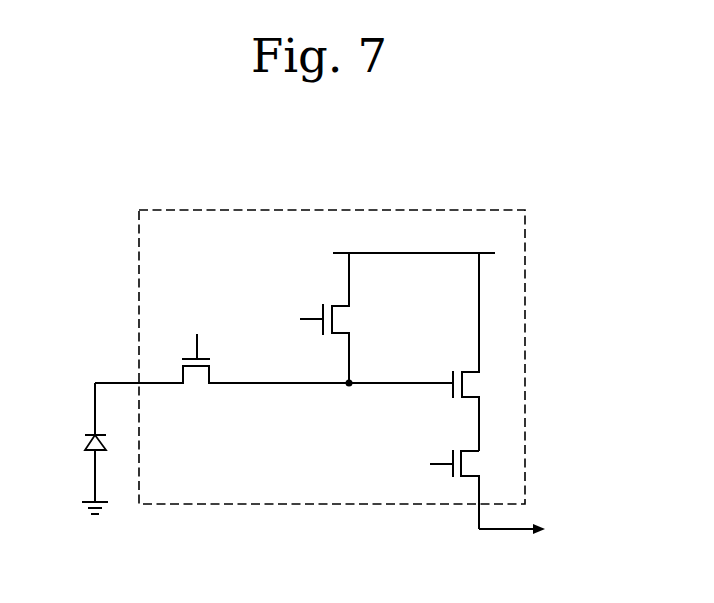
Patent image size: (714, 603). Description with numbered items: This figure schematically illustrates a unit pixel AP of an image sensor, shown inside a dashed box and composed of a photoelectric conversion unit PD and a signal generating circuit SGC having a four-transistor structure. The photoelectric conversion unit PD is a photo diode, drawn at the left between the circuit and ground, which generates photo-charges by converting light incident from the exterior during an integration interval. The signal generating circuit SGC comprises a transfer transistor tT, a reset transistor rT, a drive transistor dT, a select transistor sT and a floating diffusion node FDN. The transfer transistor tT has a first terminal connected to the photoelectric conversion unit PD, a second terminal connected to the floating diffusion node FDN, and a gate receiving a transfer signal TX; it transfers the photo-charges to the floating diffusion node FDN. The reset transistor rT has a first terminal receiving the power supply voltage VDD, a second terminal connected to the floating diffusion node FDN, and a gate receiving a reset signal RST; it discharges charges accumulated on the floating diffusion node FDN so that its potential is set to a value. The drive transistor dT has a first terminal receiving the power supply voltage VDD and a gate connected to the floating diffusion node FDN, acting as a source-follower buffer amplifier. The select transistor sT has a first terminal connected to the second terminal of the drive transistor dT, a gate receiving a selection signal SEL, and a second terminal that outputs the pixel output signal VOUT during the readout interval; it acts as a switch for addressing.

The unit pixel AP is at (499, 179).
The signal generating circuit SGC is at (525, 364).
The photoelectric conversion unit PD is at (83, 441).
The floating diffusion node FDN is at (349, 388).
The power supply voltage VDD is at (414, 243).
The pixel output signal VOUT is at (535, 531).
The transfer signal TX is at (195, 335).
The reset signal RST is at (292, 320).
The selection signal SEL is at (422, 465).
The transfer transistor tT is at (274, 386).
The reset transistor rT is at (347, 318).
The drive transistor dT is at (476, 352).
The select transistor sT is at (475, 489).